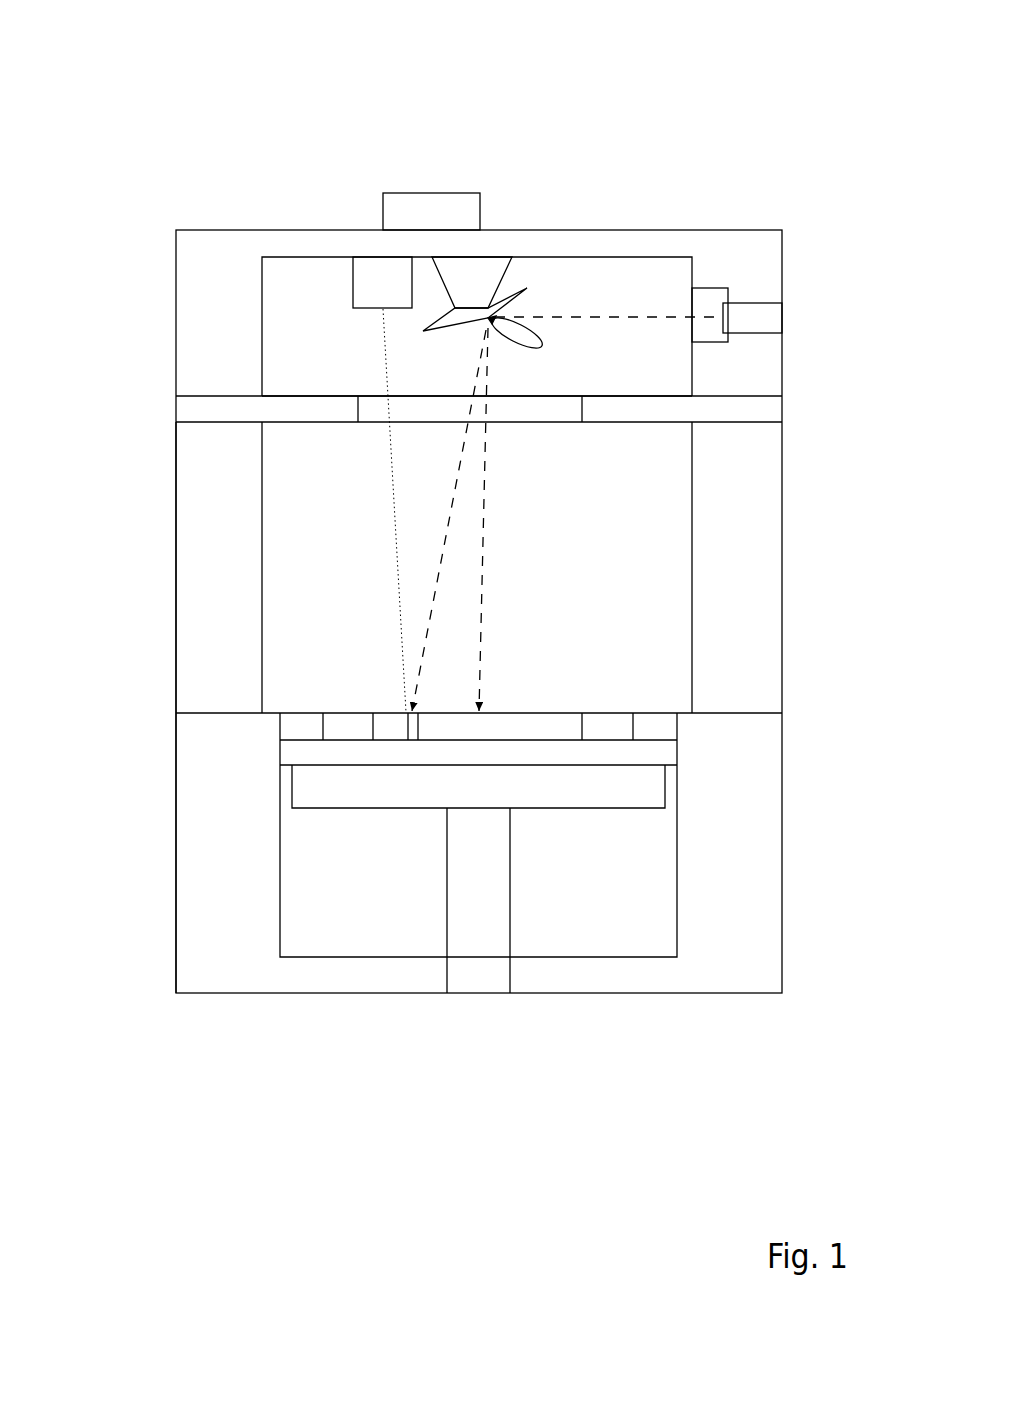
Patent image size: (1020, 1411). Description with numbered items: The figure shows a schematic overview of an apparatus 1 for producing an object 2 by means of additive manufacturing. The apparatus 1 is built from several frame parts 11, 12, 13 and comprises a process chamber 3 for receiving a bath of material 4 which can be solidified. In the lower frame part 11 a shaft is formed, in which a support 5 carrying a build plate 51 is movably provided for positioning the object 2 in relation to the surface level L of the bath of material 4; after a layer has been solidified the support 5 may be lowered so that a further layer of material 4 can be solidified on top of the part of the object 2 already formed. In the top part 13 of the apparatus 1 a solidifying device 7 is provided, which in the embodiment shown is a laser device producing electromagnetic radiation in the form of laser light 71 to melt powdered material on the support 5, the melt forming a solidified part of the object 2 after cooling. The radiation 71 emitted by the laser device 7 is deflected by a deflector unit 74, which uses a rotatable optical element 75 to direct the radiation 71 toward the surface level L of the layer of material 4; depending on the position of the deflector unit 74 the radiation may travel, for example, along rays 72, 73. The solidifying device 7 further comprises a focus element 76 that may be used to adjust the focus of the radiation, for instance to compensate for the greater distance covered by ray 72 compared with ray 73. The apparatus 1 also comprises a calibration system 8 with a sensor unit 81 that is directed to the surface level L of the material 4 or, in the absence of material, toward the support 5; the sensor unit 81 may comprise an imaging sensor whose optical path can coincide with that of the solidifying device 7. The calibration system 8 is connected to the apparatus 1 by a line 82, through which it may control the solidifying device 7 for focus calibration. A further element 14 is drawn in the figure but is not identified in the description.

The apparatus 1 is at (225, 200).
The object 2 is at (603, 733).
The process chamber 3 is at (327, 603).
The bath of material 4 is at (520, 720).
The support 5 is at (627, 832).
The build plate 51 is at (638, 752).
The solidifying device 7 is at (750, 315).
The laser light 71 is at (628, 315).
The ray 72 is at (430, 578).
The ray 73 is at (483, 535).
The deflector unit 74 is at (472, 277).
The rotatable optical element 75 is at (526, 288).
The focus element 76 is at (705, 297).
The calibration system 8 is at (411, 169).
The sensor unit 81 is at (373, 278).
The line 82 is at (433, 193).
The lower frame part 11 is at (213, 895).
The frame part 12 is at (213, 598).
The top part 13 is at (212, 313).
The partition plate 14 is at (313, 410).
The surface level L is at (528, 713).